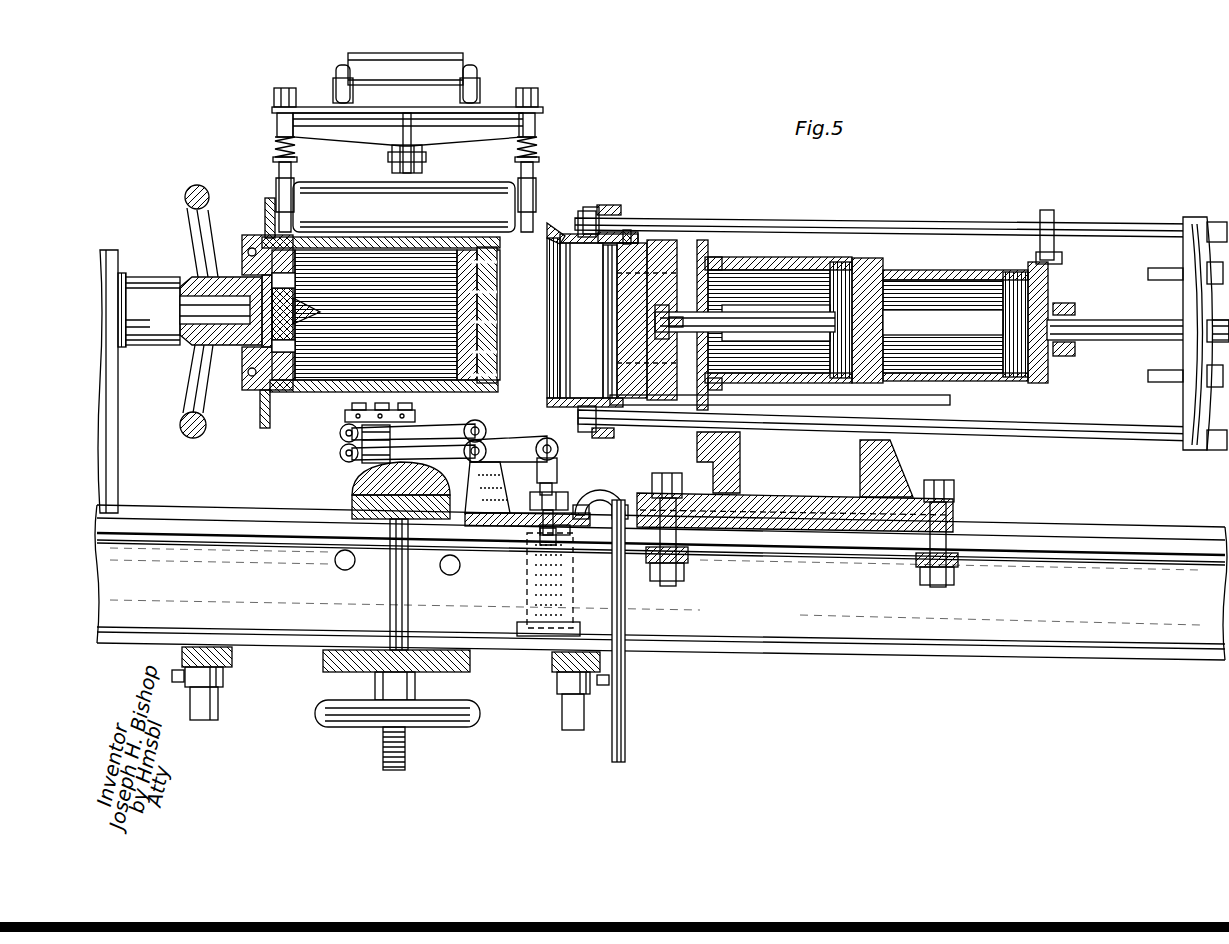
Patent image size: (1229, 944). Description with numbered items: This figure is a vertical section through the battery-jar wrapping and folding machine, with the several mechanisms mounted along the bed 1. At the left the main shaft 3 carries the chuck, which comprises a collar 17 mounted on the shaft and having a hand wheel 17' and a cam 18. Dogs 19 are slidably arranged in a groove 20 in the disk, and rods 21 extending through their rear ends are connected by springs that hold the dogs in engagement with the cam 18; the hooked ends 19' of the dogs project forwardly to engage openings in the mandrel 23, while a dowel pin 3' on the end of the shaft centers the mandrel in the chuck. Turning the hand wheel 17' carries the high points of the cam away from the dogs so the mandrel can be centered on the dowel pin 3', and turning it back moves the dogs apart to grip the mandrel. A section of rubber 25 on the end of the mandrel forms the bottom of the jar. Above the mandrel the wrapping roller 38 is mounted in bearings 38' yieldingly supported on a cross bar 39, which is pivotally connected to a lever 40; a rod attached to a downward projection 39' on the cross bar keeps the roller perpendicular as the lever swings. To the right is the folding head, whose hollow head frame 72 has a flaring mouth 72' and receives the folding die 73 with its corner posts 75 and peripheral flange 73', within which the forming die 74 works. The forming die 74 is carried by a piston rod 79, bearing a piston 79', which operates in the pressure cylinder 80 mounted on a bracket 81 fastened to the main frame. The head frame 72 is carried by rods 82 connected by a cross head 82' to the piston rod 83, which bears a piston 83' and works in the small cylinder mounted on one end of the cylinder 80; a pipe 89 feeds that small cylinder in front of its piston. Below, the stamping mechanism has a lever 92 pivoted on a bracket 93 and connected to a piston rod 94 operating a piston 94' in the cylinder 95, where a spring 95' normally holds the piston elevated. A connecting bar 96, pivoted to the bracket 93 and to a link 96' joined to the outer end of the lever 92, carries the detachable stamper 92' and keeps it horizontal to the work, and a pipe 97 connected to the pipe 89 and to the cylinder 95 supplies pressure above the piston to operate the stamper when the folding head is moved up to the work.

The bed 1 is at (1020, 628).
The main shaft 3 is at (184, 295).
The dowel pin 3' is at (311, 302).
The collar 17 is at (221, 311).
The hand wheel 17' is at (198, 167).
The cam 18 is at (245, 362).
The dogs 19 is at (246, 410).
The hooked ends 19' is at (381, 307).
The groove 20 is at (265, 205).
The rods 21 is at (245, 252).
The mandrel 23 is at (480, 312).
The section of rubber 25 is at (483, 345).
The wrapping roller 38 is at (404, 207).
The bearings 38' is at (572, 178).
The cross bar 39 is at (407, 144).
The downward projection 39' is at (440, 149).
The lever 40 is at (338, 82).
The head frame 72 is at (573, 294).
The flaring mouth 72' is at (560, 294).
The folding die 73 is at (623, 218).
The peripheral flange 73' is at (667, 206).
The forming die 74 is at (665, 250).
The corner posts 75 is at (608, 262).
The piston rod 79 is at (745, 334).
The piston 79' is at (854, 281).
The pressure cylinder 80 is at (770, 258).
The bracket 81 is at (750, 490).
The rods 82 is at (885, 326).
The cross head 82' is at (1184, 333).
The piston rod 83 is at (1138, 336).
The piston 83' is at (1031, 237).
The pipe 89 is at (1058, 212).
The lever 92 is at (519, 465).
The stamper 92' is at (350, 441).
The bracket 93 is at (505, 470).
The piston rod 94 is at (584, 499).
The piston 94' is at (497, 576).
The cylinder 95 is at (563, 580).
The spring 95' is at (502, 610).
The connecting bar 96 is at (402, 441).
The link 96' is at (397, 453).
The pipe 97 is at (626, 735).